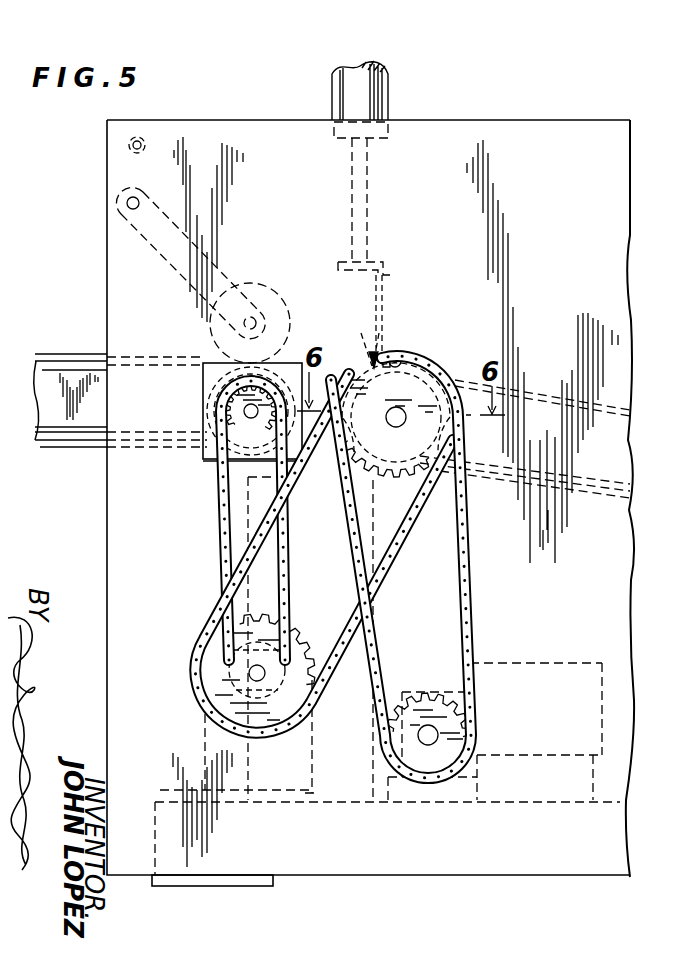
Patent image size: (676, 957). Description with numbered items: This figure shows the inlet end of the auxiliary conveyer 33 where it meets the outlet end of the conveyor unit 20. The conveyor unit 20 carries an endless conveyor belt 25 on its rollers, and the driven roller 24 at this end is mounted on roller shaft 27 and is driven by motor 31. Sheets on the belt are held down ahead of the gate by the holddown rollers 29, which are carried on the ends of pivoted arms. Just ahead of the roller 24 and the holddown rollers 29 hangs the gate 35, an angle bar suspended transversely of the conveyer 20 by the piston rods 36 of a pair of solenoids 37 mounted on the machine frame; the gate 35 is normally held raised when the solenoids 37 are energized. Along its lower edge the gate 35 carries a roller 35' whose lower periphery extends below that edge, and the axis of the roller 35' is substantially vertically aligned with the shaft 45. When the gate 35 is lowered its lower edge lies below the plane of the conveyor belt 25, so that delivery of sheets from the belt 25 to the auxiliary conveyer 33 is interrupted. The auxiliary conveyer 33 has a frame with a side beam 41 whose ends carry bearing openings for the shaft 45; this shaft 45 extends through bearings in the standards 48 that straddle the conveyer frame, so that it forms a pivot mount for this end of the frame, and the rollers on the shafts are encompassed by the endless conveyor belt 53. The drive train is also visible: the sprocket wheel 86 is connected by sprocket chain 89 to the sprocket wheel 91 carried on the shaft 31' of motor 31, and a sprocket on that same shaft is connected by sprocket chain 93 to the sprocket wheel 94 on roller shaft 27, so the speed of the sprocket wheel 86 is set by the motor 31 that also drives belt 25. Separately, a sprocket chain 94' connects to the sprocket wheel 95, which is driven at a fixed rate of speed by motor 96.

The conveyor unit 20 is at (79, 340).
The roller 24 is at (203, 395).
The endless conveyor belt 25 is at (67, 449).
The roller shaft 27 is at (247, 415).
The holddown roller 29 is at (278, 283).
The motor 31 is at (186, 726).
The motor shaft 31' is at (214, 666).
The auxiliary conveyer 33 is at (544, 378).
The gate 35 is at (390, 274).
The roller 35' is at (394, 321).
The piston rod 36 is at (380, 213).
The solenoid 37 is at (399, 112).
The side beam 41 is at (612, 467).
The shaft 45 is at (399, 356).
The standard 48 is at (124, 146).
The endless conveyor belt 53 is at (593, 490).
The sprocket wheel 86 is at (420, 364).
The sprocket chain 89 is at (381, 580).
The sprocket wheel 91 is at (296, 698).
The sprocket chain 93 is at (223, 550).
The sprocket wheel 94 is at (210, 414).
The sprocket chain 94' is at (429, 567).
The sprocket wheel 95 is at (455, 722).
The motor 96 is at (580, 682).